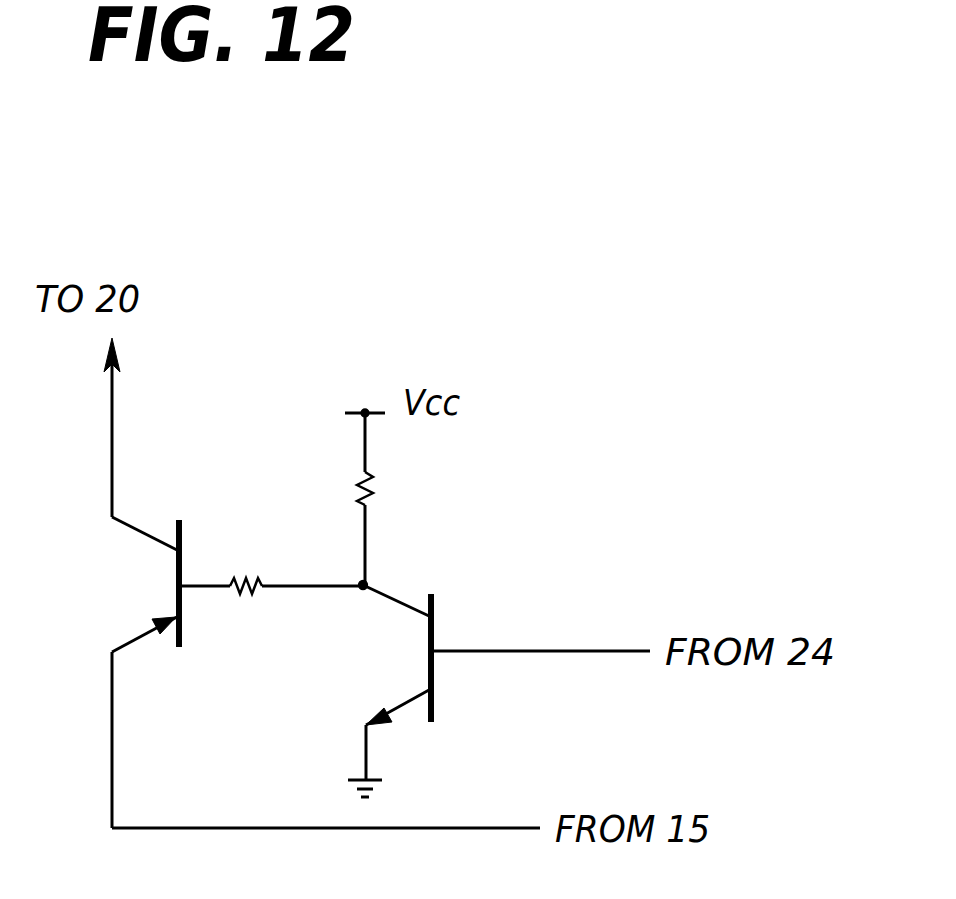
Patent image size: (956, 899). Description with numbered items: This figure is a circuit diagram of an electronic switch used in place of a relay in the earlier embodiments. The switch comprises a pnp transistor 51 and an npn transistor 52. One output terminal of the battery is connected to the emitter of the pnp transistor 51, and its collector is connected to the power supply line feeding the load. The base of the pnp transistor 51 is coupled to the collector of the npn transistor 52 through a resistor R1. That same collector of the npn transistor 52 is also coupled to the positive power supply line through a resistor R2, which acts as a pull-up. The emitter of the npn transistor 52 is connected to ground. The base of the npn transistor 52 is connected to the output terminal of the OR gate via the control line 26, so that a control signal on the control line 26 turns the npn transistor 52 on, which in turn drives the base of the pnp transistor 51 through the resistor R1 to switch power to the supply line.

The pnp transistor 51 is at (160, 580).
The npn transistor 52 is at (434, 632).
The control line 26 is at (542, 651).
The resistor R1 is at (272, 611).
The resistor R2 is at (390, 497).